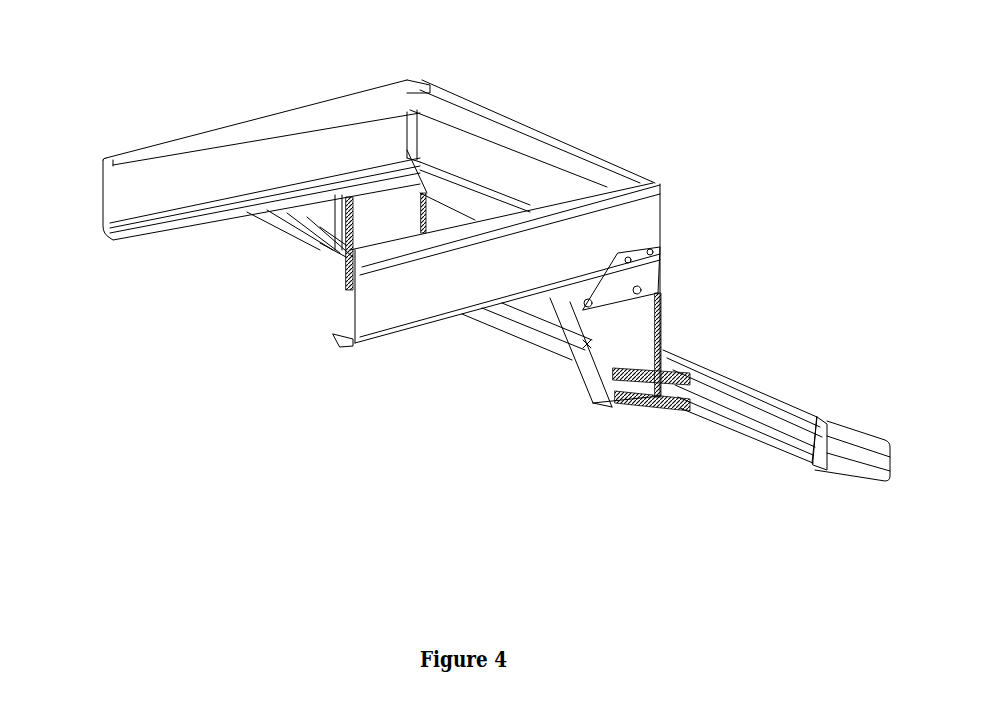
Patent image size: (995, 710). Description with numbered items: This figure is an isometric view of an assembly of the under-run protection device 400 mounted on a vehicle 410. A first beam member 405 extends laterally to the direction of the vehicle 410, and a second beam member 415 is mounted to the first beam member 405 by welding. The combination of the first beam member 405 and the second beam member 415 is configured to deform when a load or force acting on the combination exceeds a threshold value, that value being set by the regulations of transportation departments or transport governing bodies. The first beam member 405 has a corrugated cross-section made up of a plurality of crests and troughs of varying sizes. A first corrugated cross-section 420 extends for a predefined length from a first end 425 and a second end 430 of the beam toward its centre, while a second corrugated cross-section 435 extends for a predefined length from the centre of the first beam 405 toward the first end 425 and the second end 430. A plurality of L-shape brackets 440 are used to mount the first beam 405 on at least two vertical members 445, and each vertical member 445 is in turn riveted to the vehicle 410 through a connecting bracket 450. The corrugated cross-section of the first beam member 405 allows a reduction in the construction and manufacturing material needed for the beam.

The under-run protection device 400 is at (677, 337).
The first beam member 405 is at (712, 425).
The vehicle 410 is at (360, 298).
The second beam member 415 is at (857, 450).
The first corrugated cross-section 420 is at (287, 222).
The first end 425 is at (825, 470).
The second end 430 is at (250, 212).
The second corrugated cross-section 435 is at (527, 318).
The L-shape bracket 440 is at (633, 373).
The vertical member 445 is at (375, 218).
The connecting bracket 450 is at (633, 268).